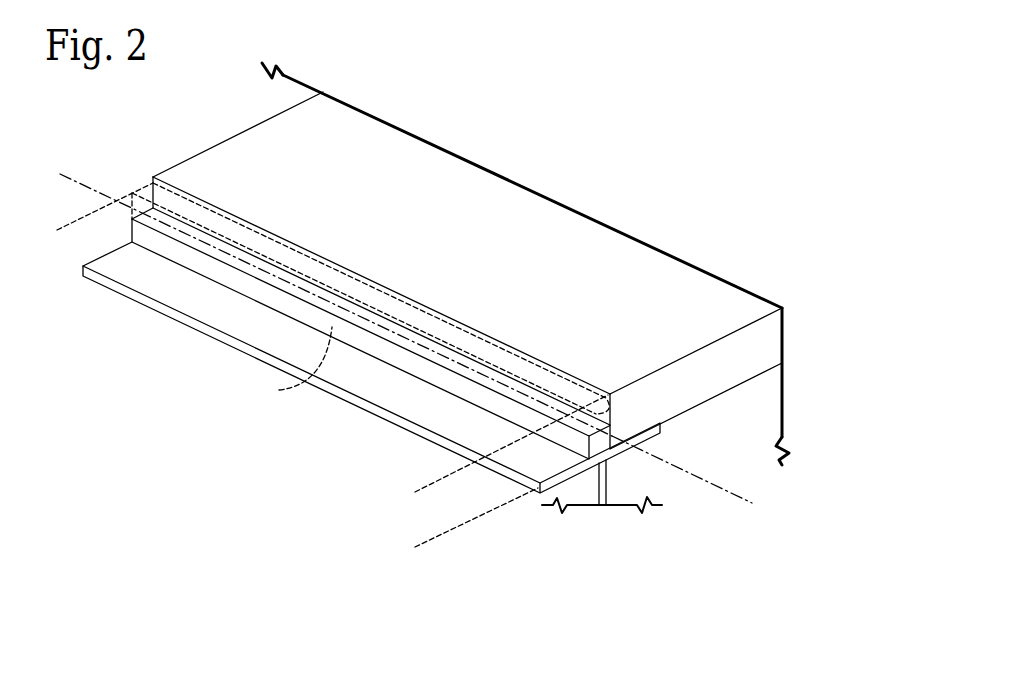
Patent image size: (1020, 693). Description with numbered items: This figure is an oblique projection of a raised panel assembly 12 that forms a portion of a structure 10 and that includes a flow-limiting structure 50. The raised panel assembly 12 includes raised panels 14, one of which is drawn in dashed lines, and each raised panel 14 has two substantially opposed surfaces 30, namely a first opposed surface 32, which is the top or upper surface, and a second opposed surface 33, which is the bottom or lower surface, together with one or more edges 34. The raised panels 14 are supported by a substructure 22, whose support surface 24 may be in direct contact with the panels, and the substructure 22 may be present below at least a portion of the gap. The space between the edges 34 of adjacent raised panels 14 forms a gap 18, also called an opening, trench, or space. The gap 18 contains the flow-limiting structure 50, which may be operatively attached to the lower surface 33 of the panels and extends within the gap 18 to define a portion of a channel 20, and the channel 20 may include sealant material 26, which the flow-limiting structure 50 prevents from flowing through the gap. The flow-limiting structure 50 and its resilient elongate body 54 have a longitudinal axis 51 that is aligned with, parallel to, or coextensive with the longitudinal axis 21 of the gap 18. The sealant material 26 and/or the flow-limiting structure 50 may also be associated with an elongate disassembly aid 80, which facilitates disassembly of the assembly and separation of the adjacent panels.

The structure 10 is at (707, 92).
The raised panel assembly 12 is at (680, 132).
The raised panels 14 is at (204, 146).
The gap 18 is at (136, 170).
The channel 20 is at (128, 181).
The longitudinal axis of gap 21 is at (720, 488).
The substructure 22 is at (392, 395).
The support surface 24 is at (220, 319).
The sealant material 26 is at (228, 233).
The opposed surfaces 30 is at (268, 135).
The first opposed surface 32 is at (290, 114).
The second opposed surface 33 is at (698, 408).
The edges 34 is at (455, 337).
The flow-limiting structure 50 is at (172, 251).
The longitudinal axis of flow-limiting structure 51 is at (668, 463).
The resilient elongate body 54 is at (289, 302).
The elongate disassembly aid 80 is at (292, 365).